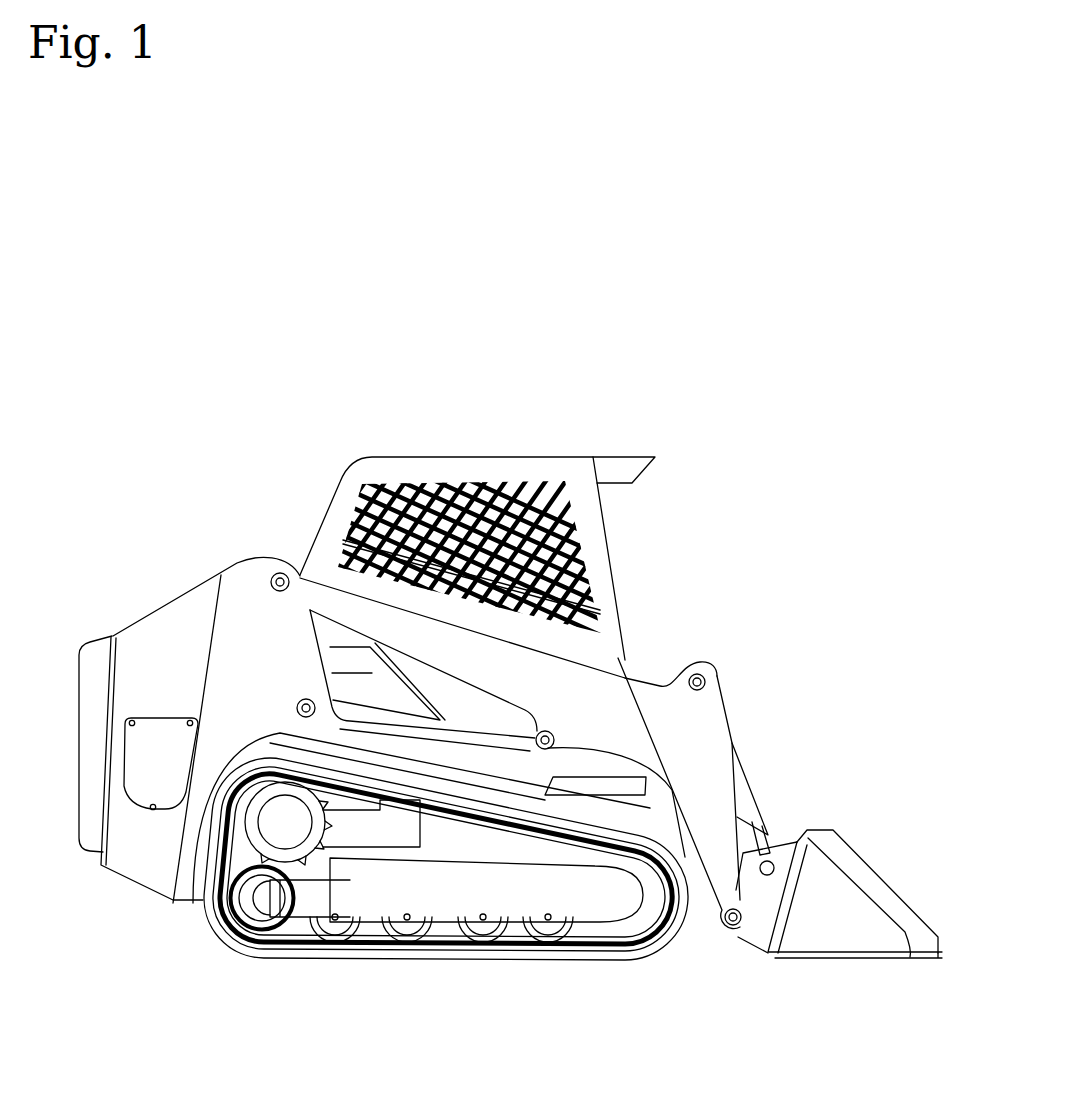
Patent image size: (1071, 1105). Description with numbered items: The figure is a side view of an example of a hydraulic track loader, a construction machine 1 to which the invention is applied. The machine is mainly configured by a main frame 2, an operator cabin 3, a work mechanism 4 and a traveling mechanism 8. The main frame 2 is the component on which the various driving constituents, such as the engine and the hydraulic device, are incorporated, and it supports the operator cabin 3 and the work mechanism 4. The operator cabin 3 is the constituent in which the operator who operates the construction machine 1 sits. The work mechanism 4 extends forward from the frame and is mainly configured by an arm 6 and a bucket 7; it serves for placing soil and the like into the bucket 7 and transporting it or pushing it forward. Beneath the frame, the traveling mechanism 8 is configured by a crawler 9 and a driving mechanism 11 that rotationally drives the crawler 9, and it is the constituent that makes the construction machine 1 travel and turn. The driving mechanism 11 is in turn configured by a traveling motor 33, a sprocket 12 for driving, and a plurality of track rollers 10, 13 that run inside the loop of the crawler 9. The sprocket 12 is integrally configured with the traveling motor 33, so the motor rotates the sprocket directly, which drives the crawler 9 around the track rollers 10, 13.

The construction machine 1 is at (498, 406).
The main frame 2 is at (217, 572).
The operator cabin 3 is at (608, 526).
The work mechanism 4 is at (742, 672).
The arm 6 is at (712, 732).
The bucket 7 is at (856, 848).
The traveling mechanism 8 is at (257, 972).
The crawler 9 is at (628, 964).
The track roller 10 is at (213, 925).
The driving mechanism 11 is at (212, 838).
The sprocket 12 is at (310, 882).
The track roller 13 is at (406, 921).
The traveling motor 33 is at (284, 820).